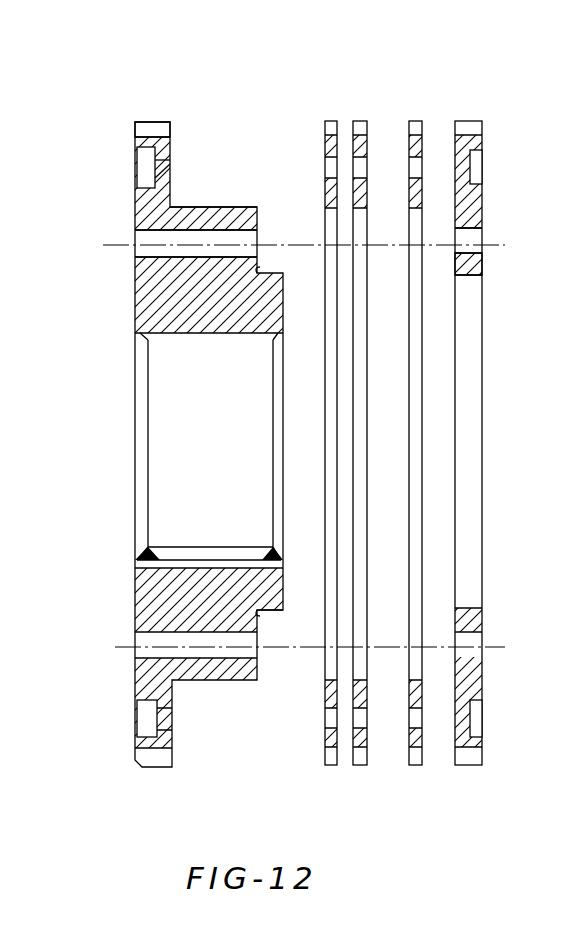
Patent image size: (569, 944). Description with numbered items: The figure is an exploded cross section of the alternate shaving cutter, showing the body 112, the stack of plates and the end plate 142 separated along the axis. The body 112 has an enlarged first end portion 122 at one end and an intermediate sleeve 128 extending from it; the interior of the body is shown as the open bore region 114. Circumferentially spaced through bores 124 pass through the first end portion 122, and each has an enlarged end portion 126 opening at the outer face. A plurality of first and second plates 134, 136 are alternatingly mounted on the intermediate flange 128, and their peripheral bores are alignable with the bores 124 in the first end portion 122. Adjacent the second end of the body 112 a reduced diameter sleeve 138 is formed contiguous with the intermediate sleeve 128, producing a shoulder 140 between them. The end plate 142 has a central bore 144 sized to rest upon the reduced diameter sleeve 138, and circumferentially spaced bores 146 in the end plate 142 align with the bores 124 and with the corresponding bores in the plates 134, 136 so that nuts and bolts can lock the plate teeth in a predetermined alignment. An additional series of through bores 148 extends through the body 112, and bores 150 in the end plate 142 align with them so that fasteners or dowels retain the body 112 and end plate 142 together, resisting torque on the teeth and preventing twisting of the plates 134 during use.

The body 112 is at (156, 290).
The bore 114 is at (178, 338).
The enlarged first end portion 122 is at (150, 130).
The through bores 124 is at (165, 172).
The enlarged end portion 126 is at (146, 187).
The intermediate sleeve 128 is at (208, 207).
The first plates 134 is at (361, 119).
The second plates 136 is at (329, 119).
The reduced diameter sleeve 138 is at (277, 614).
The shoulder 140 is at (263, 653).
The end plate 142 is at (468, 119).
The central bore 144 is at (471, 279).
The circumferentially spaced bores 146 is at (465, 180).
The through bores 148 is at (156, 253).
The circumferentially spaced bores 150 is at (470, 252).